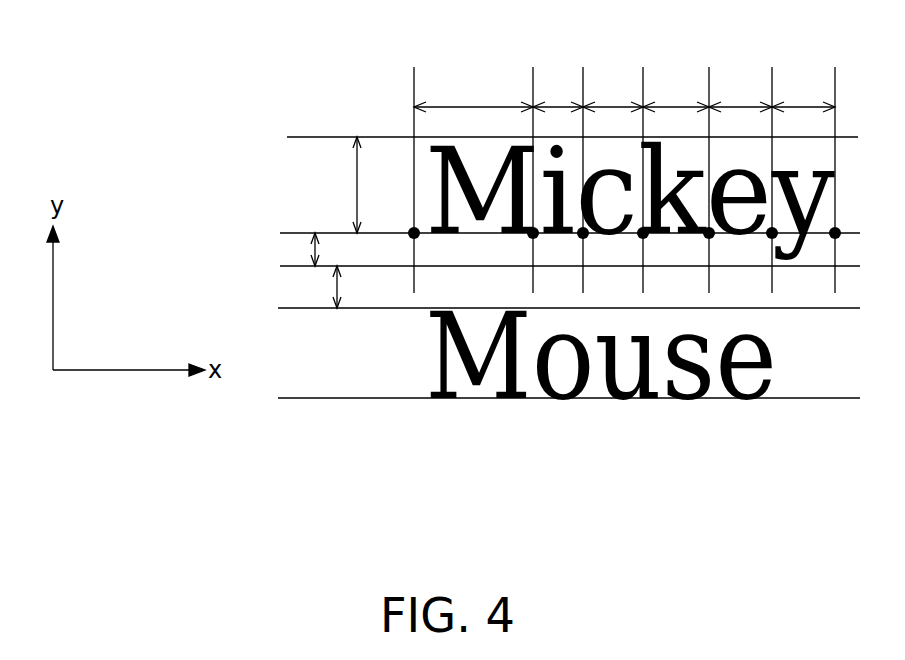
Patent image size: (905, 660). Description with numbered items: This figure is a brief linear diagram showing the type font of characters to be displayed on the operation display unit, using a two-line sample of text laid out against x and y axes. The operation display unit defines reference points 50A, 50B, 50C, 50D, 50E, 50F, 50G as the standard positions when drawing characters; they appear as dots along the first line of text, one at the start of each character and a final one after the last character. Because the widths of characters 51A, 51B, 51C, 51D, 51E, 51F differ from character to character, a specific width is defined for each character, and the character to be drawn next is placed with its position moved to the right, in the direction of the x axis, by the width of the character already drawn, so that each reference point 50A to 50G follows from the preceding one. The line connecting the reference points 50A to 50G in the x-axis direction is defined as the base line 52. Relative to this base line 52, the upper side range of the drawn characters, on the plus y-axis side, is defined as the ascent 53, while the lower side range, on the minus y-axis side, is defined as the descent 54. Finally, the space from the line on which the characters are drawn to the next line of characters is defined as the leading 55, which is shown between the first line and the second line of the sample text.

The reference point 50A is at (418, 238).
The reference point 50B is at (537, 238).
The reference point 50C is at (587, 238).
The reference point 50D is at (647, 238).
The reference point 50E is at (713, 238).
The reference point 50F is at (776, 238).
The reference point 50G is at (840, 237).
The width of character 51A is at (471, 105).
The width of character 51B is at (553, 105).
The width of character 51C is at (609, 105).
The width of character 51D is at (674, 105).
The width of character 51E is at (737, 105).
The width of character 51F is at (799, 105).
The base line 52 is at (300, 232).
The ascent 53 is at (360, 175).
The descent 54 is at (314, 256).
The leading 55 is at (335, 292).